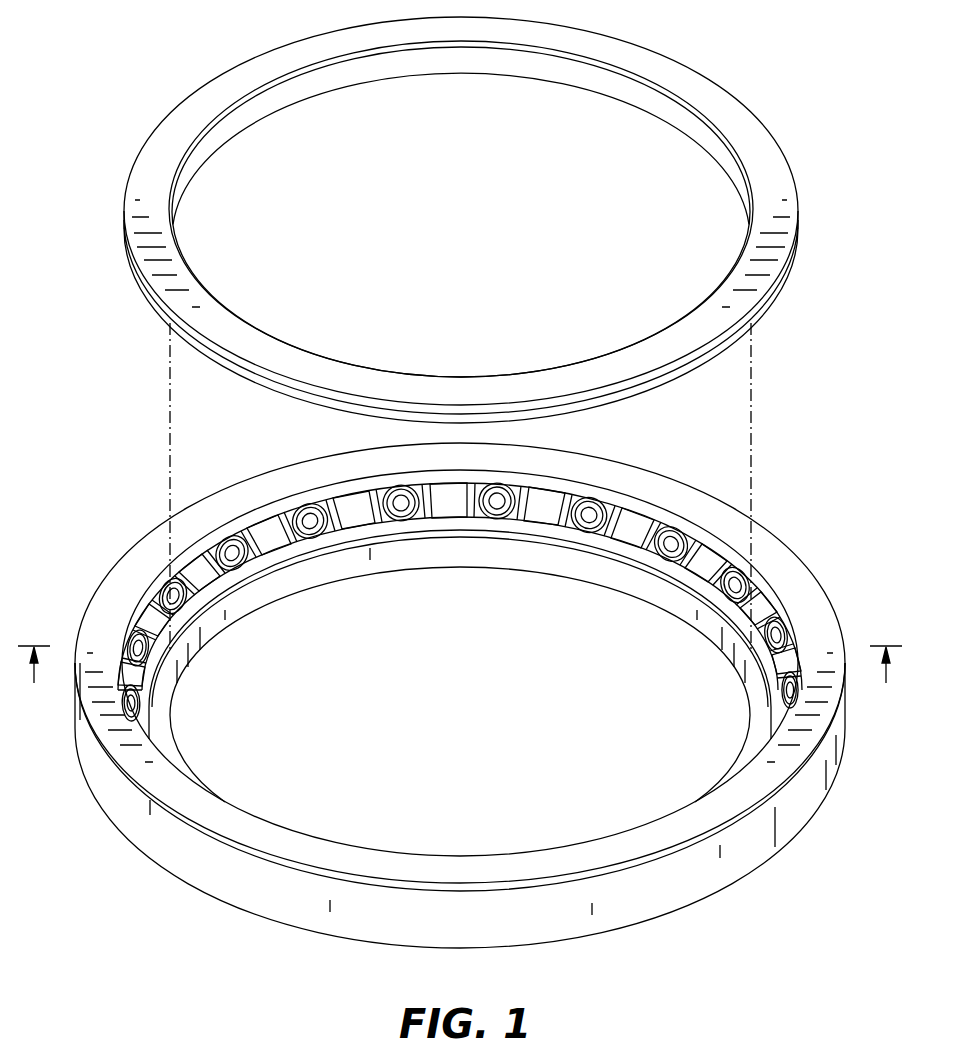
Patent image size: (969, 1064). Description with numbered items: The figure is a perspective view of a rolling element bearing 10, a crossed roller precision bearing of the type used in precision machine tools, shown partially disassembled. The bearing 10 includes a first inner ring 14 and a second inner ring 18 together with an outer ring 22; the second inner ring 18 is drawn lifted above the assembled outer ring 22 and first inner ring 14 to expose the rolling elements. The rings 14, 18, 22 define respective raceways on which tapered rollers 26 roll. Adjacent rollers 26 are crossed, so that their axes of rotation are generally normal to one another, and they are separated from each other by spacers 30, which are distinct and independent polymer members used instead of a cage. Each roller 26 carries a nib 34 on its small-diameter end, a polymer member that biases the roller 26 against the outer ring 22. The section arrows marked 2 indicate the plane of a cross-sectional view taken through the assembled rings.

The rolling element bearing 10 is at (880, 214).
The first inner ring 14 is at (623, 573).
The second inner ring 18 is at (760, 160).
The outer ring 22 is at (814, 620).
The rollers 26 is at (717, 560).
The spacers 30 is at (523, 486).
The nib 34 is at (399, 503).
The section line 2 is at (460, 682).